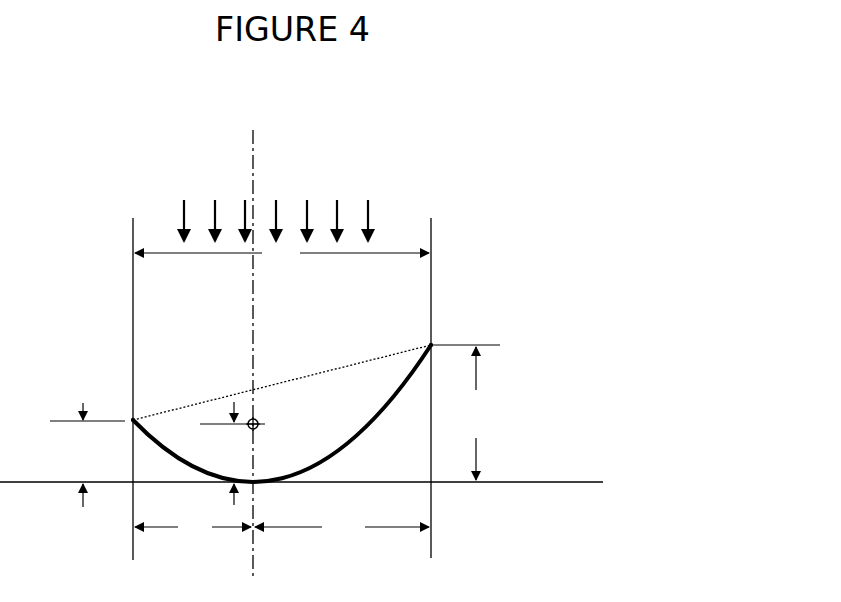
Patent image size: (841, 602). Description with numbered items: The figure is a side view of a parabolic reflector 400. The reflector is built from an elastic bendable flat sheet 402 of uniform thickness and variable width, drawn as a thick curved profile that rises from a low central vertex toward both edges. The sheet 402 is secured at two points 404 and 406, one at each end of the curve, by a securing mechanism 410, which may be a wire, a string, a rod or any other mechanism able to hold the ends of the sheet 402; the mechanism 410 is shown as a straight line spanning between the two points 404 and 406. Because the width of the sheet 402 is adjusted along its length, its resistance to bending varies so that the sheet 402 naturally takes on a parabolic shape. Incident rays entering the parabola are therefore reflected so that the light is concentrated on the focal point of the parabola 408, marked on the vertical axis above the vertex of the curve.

The parabolic reflector 400 is at (418, 163).
The elastic bendable flat sheet 402 is at (386, 425).
The first securing point 404 is at (127, 411).
The second securing point 406 is at (440, 346).
The focal point of the parabola 408 is at (264, 410).
The securing mechanism 410 is at (205, 398).